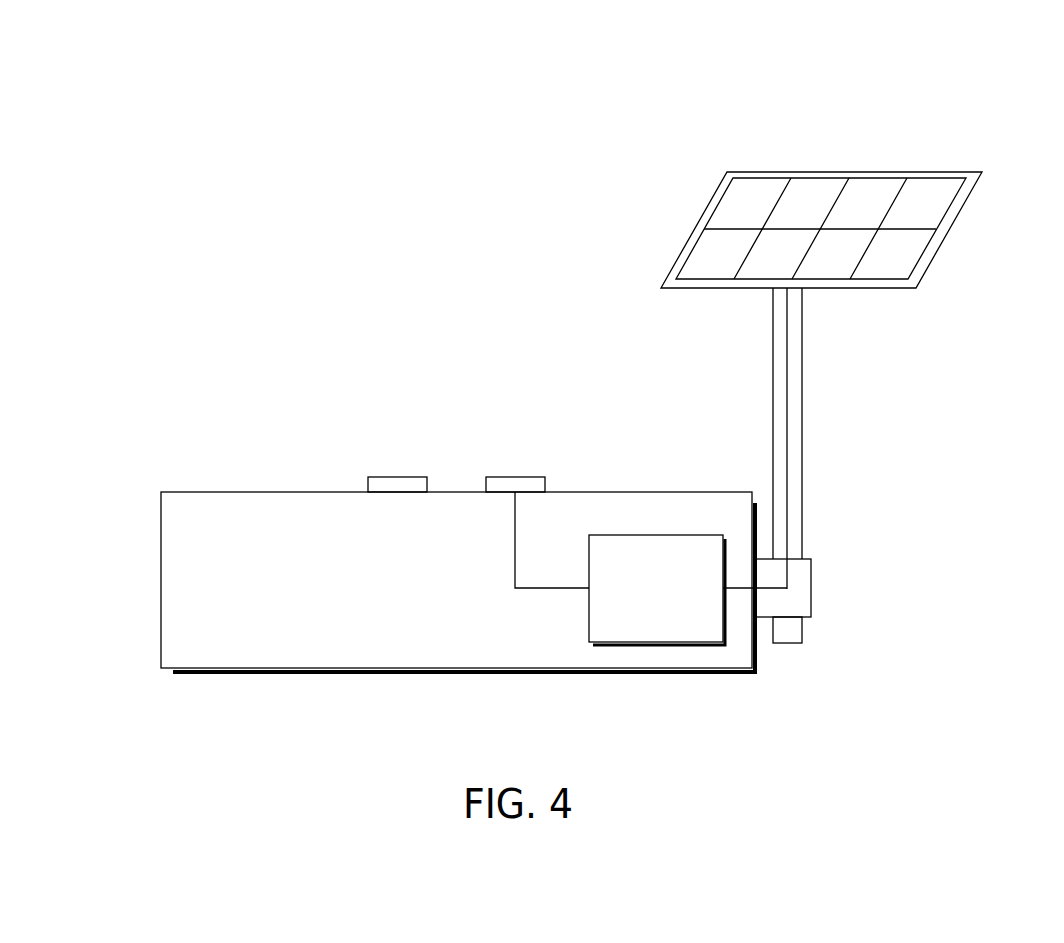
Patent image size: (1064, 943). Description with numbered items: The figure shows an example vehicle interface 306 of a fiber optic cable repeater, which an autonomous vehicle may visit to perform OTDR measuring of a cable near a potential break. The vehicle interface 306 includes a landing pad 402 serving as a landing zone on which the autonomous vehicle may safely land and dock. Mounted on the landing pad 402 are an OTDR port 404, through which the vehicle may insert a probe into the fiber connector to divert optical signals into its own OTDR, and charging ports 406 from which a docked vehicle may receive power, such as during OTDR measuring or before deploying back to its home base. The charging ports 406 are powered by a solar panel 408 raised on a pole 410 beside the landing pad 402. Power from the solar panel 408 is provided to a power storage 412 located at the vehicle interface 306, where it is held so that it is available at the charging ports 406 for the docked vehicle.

The vehicle interface 306 is at (978, 89).
The landing pad 402 is at (205, 486).
The OTDR port 404 is at (393, 470).
The charging ports 406 is at (518, 470).
The solar panel 408 is at (682, 232).
The pole 410 is at (808, 388).
The power storage 412 is at (639, 624).